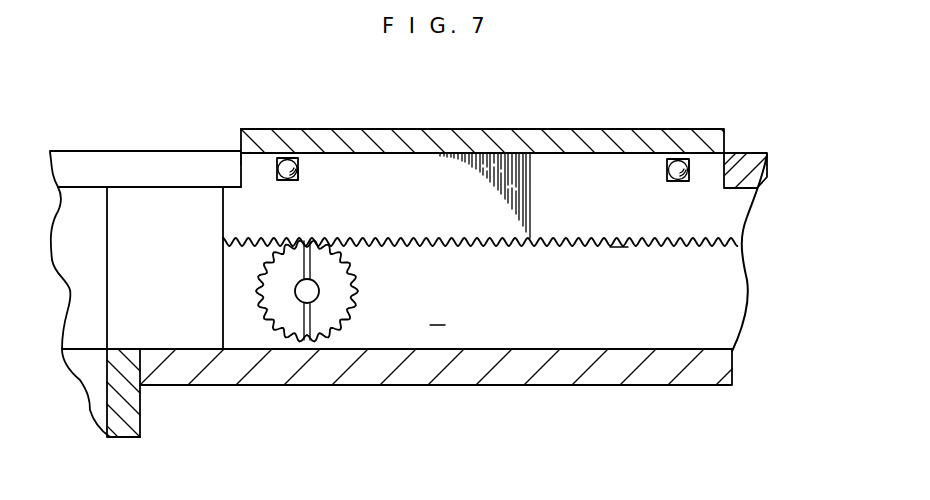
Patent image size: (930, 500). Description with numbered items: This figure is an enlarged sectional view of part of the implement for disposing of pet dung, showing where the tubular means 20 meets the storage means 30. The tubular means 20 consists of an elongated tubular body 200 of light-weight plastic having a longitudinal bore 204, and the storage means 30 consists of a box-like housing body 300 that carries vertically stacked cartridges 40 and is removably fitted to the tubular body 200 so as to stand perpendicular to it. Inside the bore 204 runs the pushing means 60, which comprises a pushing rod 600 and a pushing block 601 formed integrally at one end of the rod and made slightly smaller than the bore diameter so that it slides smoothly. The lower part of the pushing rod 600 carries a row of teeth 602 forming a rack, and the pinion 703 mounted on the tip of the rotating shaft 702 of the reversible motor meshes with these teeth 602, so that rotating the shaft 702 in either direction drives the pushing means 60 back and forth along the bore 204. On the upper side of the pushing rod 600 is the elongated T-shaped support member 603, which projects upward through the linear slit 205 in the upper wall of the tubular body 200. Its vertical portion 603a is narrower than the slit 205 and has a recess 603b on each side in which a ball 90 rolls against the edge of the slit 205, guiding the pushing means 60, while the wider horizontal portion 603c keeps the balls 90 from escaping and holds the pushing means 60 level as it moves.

The tubular means 20 is at (578, 388).
The storage means 30 is at (143, 404).
The cartridge 40 is at (78, 307).
The pushing means 60 is at (699, 250).
The ball 90 is at (284, 160).
The tubular body 200 is at (493, 378).
The longitudinal bore 204 is at (437, 325).
The linear slit 205 is at (107, 165).
The housing body 300 is at (140, 433).
The pushing rod 600 is at (730, 210).
The pushing block 601 is at (172, 203).
The teeth 602 is at (618, 247).
The support member 603 is at (557, 130).
The vertical portion 603a is at (250, 160).
The recess 603b is at (298, 177).
The horizontal portion 603c is at (490, 137).
The rotating shaft 702 is at (305, 297).
The pinion 703 is at (333, 318).